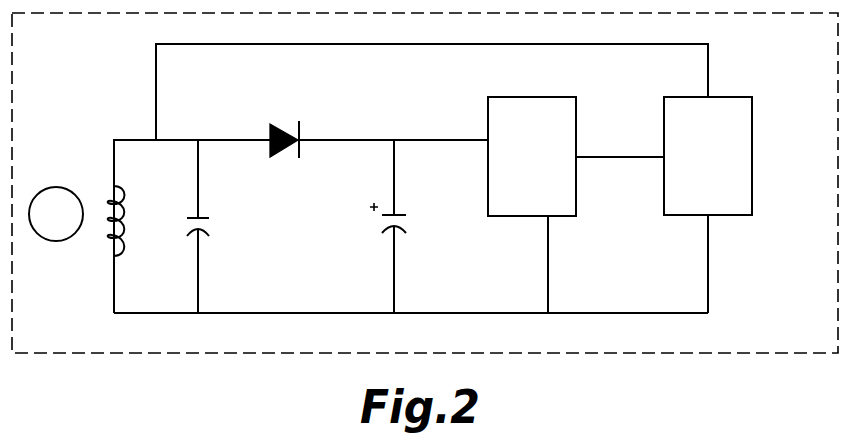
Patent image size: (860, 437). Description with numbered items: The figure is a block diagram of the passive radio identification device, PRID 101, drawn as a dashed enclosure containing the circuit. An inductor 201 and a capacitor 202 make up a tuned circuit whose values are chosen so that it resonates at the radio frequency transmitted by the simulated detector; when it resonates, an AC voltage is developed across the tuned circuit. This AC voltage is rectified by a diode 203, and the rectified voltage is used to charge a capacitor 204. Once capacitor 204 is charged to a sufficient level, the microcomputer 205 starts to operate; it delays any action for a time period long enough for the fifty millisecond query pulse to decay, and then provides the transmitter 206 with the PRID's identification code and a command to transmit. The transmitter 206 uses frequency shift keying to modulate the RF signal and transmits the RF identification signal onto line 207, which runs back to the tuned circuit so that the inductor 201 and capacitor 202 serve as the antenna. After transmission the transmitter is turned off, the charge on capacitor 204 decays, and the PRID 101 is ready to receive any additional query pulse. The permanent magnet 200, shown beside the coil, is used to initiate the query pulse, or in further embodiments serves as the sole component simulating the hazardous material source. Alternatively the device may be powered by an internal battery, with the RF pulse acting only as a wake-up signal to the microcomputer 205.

The passive radio identification device 101 is at (165, 354).
The permanent magnet 200 is at (56, 228).
The inductor 201 is at (122, 186).
The capacitor 202 is at (205, 224).
The diode 203 is at (274, 146).
The capacitor 204 is at (400, 224).
The microcomputer 205 is at (507, 155).
The transmitter 206 is at (688, 151).
The line 207 is at (640, 44).